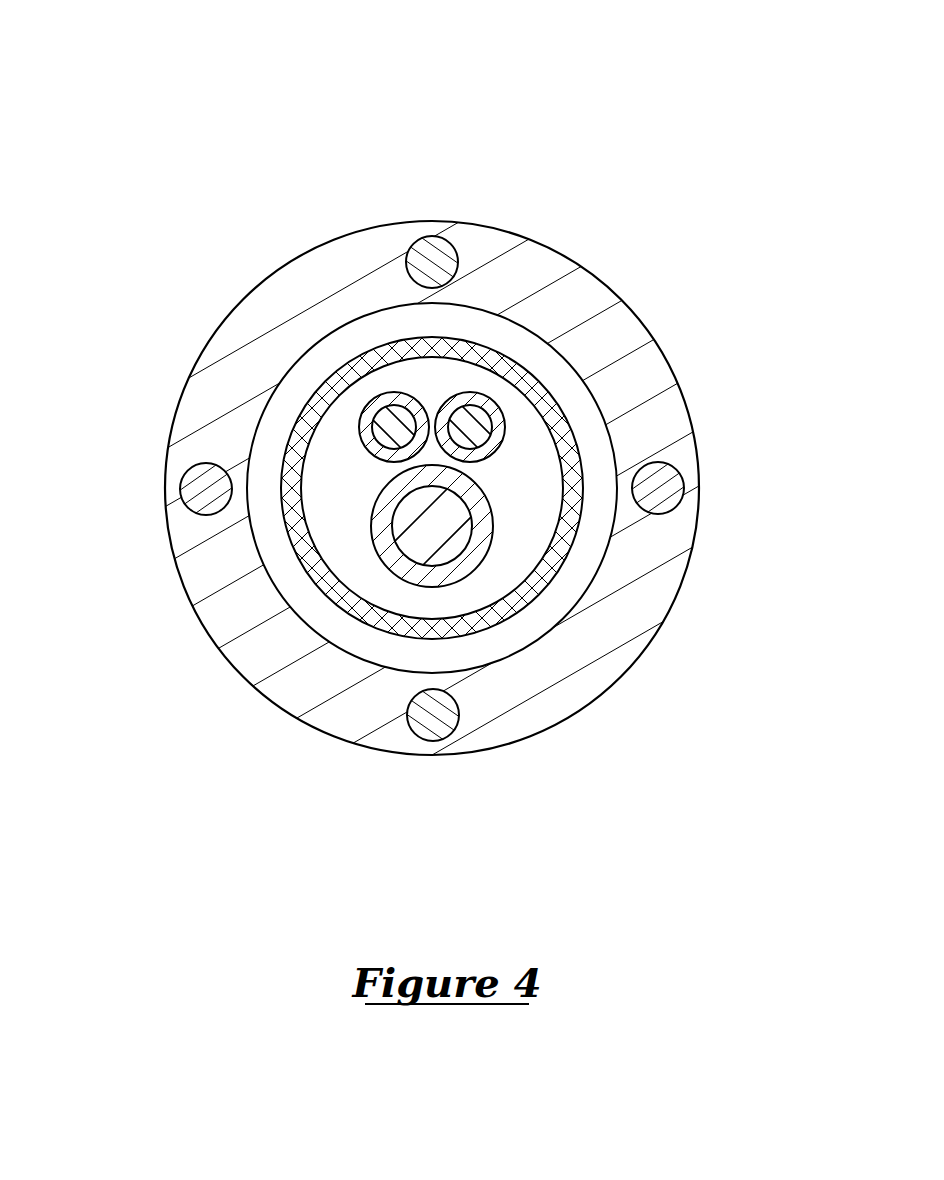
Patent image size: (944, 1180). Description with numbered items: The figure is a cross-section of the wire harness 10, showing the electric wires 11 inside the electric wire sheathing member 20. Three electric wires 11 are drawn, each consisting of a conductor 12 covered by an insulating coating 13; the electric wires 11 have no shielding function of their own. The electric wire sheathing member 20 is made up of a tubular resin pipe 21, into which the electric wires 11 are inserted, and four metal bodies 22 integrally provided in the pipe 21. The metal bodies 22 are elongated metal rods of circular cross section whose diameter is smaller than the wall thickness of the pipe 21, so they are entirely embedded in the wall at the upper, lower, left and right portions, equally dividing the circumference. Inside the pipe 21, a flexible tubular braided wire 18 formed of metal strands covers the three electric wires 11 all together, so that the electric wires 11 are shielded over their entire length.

The wire harness 10 is at (518, 100).
The electric wires 11 is at (437, 525).
The conductor 12 is at (380, 418).
The insulating coating 13 is at (382, 428).
The braided wire 18 is at (345, 610).
The electric wire sheathing member 20 is at (310, 272).
The pipe 21 is at (678, 413).
The metal bodies 22 is at (432, 252).